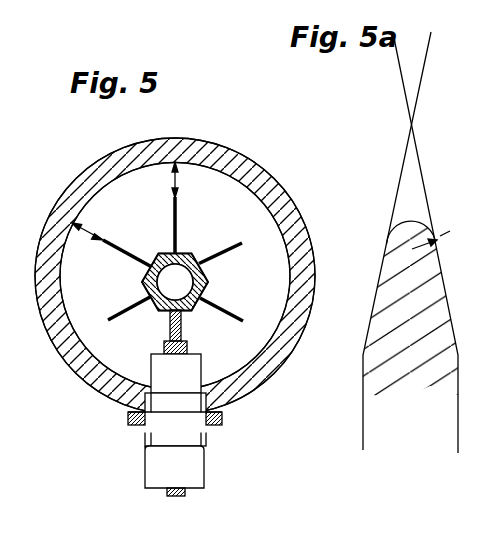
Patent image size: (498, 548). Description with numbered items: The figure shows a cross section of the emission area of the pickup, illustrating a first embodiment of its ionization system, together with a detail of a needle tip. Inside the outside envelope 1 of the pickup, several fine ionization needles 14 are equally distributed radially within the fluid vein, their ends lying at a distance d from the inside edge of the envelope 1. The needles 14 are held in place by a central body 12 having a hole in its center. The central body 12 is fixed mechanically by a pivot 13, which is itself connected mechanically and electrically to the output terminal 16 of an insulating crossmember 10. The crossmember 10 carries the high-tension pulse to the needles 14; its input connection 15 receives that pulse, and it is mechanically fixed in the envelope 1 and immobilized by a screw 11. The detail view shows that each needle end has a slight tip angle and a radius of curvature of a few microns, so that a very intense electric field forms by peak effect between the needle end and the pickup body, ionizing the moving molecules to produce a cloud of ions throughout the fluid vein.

In FIG. 5, the outside envelope 1 is at (277, 192).
In FIG. 5, the insulating crossmember 10 is at (152, 464).
In FIG. 5, the screw 11 is at (216, 428).
In FIG. 5, the central body 12 is at (208, 282).
In FIG. 5, the pivot 13 is at (181, 325).
In FIG. 5, the ionization needles 14 is at (232, 250).
In FIG. 5A, the ionization needles 14 is at (452, 360).
In FIG. 5, the input connection 15 is at (185, 494).
In FIG. 5, the output terminal 16 is at (165, 346).